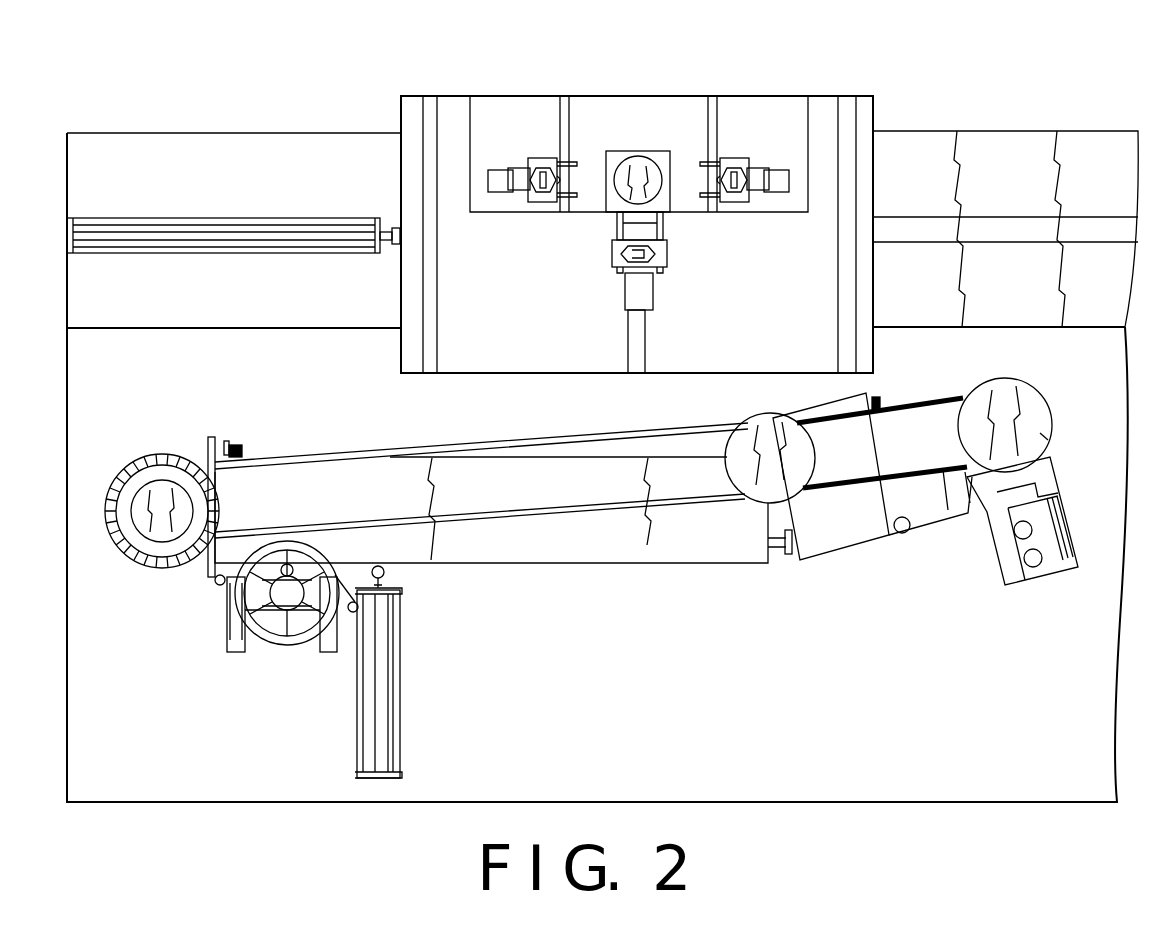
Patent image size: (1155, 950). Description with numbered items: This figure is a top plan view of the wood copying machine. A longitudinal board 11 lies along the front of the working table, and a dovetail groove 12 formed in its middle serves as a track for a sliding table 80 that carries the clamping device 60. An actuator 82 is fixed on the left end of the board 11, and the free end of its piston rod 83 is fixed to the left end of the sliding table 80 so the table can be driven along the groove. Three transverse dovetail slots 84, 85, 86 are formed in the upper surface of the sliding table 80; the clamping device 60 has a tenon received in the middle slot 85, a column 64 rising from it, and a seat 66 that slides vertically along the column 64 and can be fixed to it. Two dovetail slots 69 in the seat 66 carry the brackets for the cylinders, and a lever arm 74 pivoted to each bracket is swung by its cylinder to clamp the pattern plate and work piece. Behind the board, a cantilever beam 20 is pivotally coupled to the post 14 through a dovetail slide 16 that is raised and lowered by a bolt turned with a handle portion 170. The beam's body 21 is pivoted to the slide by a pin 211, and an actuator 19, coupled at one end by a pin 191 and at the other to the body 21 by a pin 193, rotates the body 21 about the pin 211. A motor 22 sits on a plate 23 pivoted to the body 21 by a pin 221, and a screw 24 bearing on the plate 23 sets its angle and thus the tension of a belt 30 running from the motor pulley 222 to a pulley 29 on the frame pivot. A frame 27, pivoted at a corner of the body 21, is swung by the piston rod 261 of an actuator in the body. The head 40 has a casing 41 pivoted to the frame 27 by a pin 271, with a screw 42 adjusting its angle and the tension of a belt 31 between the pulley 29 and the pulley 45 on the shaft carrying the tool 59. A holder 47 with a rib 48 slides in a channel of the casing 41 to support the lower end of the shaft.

The board 11 is at (1086, 142).
The dovetail groove 12 is at (1098, 232).
The post 14 is at (237, 652).
The dovetail slide 16 is at (305, 637).
The actuator 19 is at (400, 672).
The cantilever beam 20 is at (642, 592).
The body 21 is at (692, 563).
The motor 22 is at (153, 518).
The plate 23 is at (206, 440).
The screw 24 is at (244, 449).
The frame 27 is at (855, 535).
The pulley 29 is at (750, 420).
The belt 30 is at (387, 452).
The belt 31 is at (943, 485).
The head 40 is at (1044, 536).
The casing 41 is at (947, 392).
The screw 42 is at (882, 403).
The pulley 45 is at (1040, 433).
The holder 47 is at (1070, 565).
The rib 48 is at (1000, 500).
The tool 59 is at (1035, 385).
The clamping device 60 is at (694, 80).
The column 64 is at (638, 158).
The seat 66 is at (598, 105).
The dovetail slots 69 is at (722, 115).
The lever arm 74 is at (654, 298).
The sliding table 80 is at (896, 113).
The actuator 82 is at (302, 252).
The piston rod 83 is at (388, 218).
The dovetail slot 84 is at (431, 310).
The dovetail slot 85 is at (646, 347).
The dovetail slot 86 is at (852, 118).
The handle portion 170 is at (240, 610).
The pin 191 is at (352, 612).
The pin 193 is at (385, 573).
The pin 211 is at (287, 564).
The pin 221 is at (216, 584).
The pulley 222 is at (140, 565).
The piston rod 261 is at (787, 555).
The pin 271 is at (905, 535).